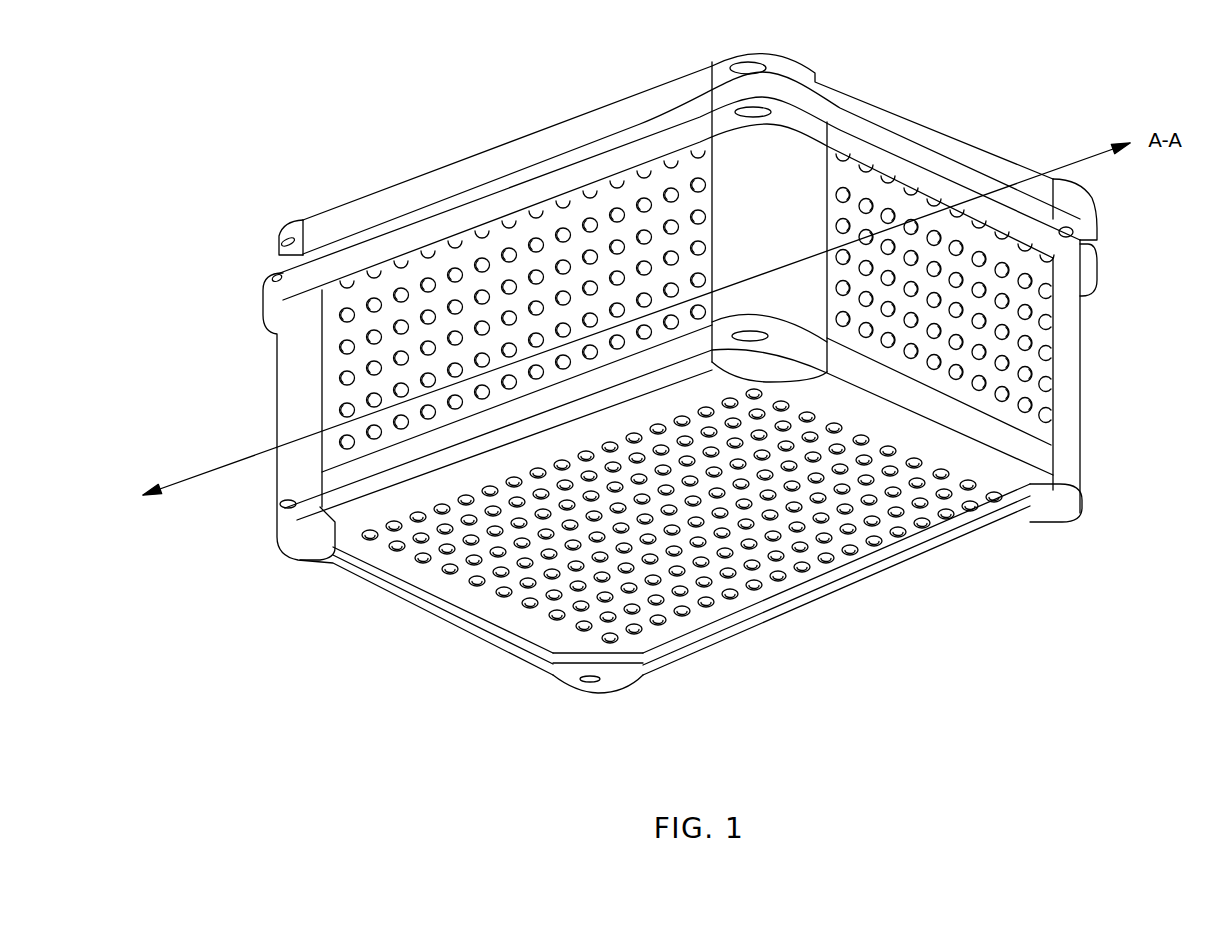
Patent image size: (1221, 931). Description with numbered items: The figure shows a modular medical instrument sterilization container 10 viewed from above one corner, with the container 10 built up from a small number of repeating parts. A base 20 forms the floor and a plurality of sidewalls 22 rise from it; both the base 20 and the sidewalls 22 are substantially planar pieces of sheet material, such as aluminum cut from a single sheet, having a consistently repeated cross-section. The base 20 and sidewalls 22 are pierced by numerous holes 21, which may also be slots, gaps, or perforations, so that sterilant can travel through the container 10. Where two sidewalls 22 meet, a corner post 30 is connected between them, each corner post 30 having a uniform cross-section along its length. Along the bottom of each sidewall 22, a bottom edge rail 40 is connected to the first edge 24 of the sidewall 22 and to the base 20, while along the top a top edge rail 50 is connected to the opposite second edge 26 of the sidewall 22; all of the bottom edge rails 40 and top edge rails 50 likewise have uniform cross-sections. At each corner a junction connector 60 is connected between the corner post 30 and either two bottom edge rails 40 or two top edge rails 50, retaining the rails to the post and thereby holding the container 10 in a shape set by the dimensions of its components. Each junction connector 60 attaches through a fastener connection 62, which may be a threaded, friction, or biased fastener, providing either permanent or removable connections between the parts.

The modular medical instrument sterilization container 10 is at (213, 100).
The base 20 is at (490, 577).
The holes 21 is at (1007, 300).
The sidewalls 22 is at (377, 380).
The first edge 24 is at (353, 483).
The second edge 26 is at (550, 205).
The corner post 30 is at (760, 205).
The bottom edge rail 40 is at (1030, 527).
The top edge rail 50 is at (415, 190).
The junction connector 60 is at (265, 292).
The fastener connection 62 is at (745, 66).